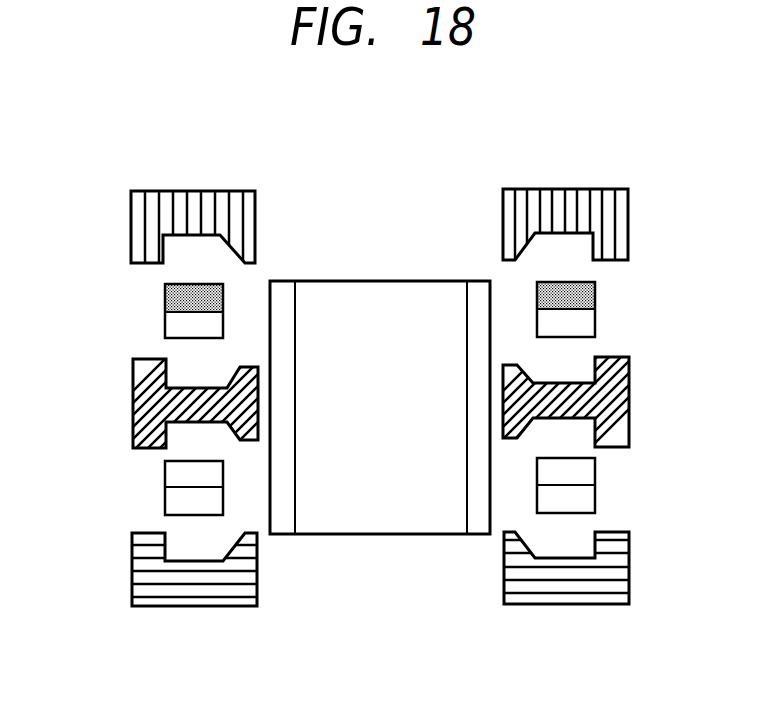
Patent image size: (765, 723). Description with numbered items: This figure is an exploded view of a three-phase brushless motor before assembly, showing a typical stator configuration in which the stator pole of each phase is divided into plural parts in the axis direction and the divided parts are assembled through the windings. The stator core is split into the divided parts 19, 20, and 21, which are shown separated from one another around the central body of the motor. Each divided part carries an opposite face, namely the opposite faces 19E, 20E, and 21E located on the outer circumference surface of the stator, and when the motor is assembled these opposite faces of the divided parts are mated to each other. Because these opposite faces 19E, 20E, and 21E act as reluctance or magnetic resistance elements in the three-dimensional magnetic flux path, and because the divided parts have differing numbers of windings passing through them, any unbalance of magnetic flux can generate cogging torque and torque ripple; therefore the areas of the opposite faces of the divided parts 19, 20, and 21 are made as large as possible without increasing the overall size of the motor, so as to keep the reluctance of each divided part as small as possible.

The divided part of the stator core 19 is at (235, 215).
The opposite face 19E is at (150, 263).
The divided part of the stator core 20 is at (233, 397).
The opposite face 20E is at (201, 392).
The divided part of the stator core 21 is at (235, 583).
The opposite face 21E is at (145, 533).